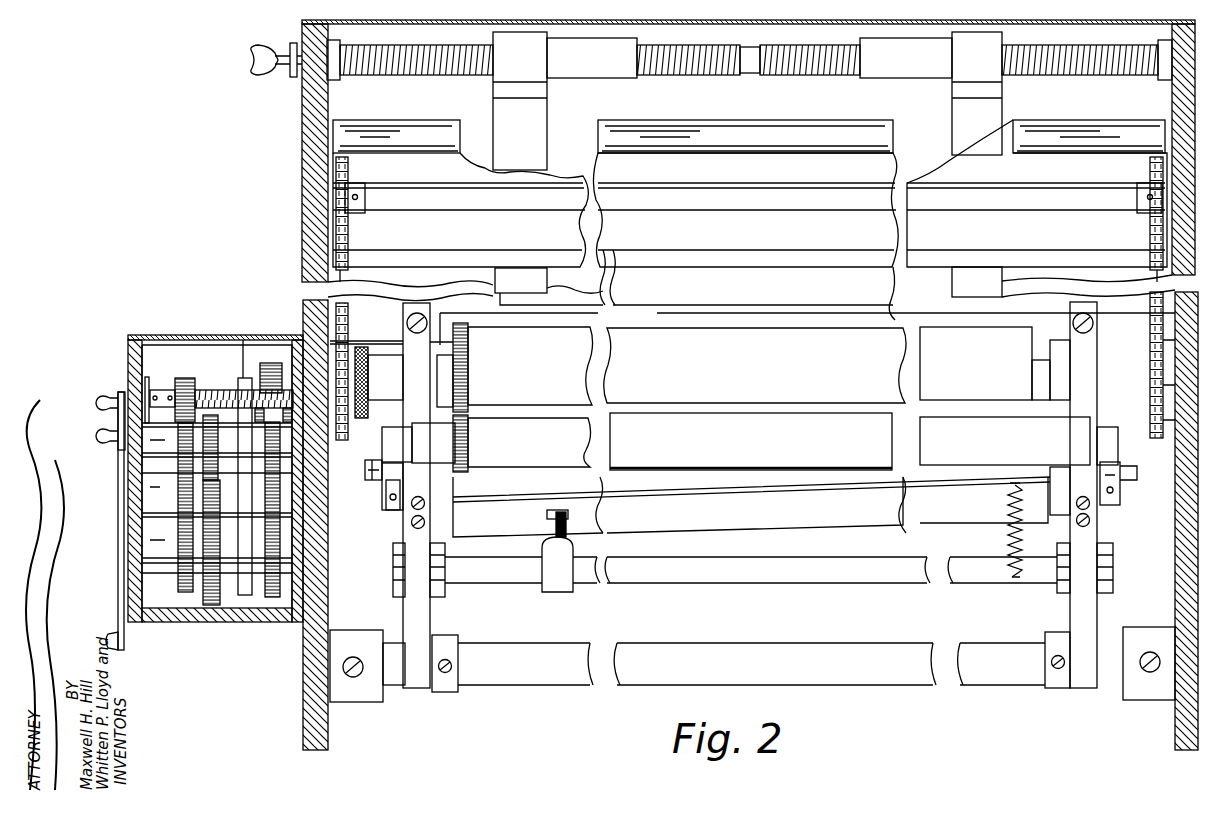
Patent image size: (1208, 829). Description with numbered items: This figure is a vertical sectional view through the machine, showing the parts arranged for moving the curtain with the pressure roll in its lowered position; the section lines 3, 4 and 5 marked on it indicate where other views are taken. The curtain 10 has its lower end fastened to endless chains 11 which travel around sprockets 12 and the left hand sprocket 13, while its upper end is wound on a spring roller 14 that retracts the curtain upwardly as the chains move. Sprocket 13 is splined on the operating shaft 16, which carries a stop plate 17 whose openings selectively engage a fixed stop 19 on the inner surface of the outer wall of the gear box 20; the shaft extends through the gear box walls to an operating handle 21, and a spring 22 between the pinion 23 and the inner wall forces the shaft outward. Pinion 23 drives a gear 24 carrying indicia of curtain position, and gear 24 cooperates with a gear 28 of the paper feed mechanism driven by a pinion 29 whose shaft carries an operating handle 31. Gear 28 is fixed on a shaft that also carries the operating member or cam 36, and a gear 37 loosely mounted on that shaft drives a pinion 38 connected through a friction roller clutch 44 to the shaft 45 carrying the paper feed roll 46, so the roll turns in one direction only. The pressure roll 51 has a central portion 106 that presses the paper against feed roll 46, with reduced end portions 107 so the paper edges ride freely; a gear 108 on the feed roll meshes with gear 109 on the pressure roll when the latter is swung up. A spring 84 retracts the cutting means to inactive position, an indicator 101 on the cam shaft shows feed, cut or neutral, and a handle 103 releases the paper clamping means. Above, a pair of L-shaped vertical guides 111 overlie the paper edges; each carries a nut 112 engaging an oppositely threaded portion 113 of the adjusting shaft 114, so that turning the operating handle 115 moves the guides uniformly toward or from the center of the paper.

The section line 3- 3 is at (1133, 292).
The section line 4- 4 is at (142, 300).
The section line 5- 5 is at (352, 490).
The curtain 10 is at (597, 163).
The endless chains 11 is at (355, 238).
The sprocket 12 is at (350, 181).
The left hand sprocket 13 is at (345, 440).
The spring roller 14 is at (826, 136).
The operating shaft 16 is at (247, 340).
The stop plate 17 is at (163, 390).
The fixed stop 19 is at (148, 378).
The gear box 20 is at (128, 357).
The operating handle 21 is at (98, 436).
The spring 22 is at (218, 390).
The pinion 23 is at (186, 378).
The gear 24 is at (178, 530).
The gear 28 is at (218, 470).
The pinion 29 is at (212, 605).
The operating handle 31 is at (124, 640).
The operating member or cam 36 is at (246, 595).
The gear 37 is at (275, 597).
The pinion 38 is at (277, 363).
The friction roller clutch 44 is at (361, 418).
The shaft 45 is at (398, 392).
The paper feed roll 46 is at (927, 335).
The pressure roll 51 is at (445, 460).
The spring 84 is at (1008, 547).
The indicator 101 is at (128, 470).
The handle 103 is at (108, 397).
The central portion 106 is at (725, 428).
The end portions 107 is at (556, 460).
The gear 108 is at (468, 368).
The gear 109 is at (468, 441).
The vertical guides 111 is at (493, 108).
The nut 112 is at (590, 68).
The threaded portion 113 is at (690, 70).
The adjusting shaft 114 is at (750, 73).
The operating handle 115 is at (250, 61).